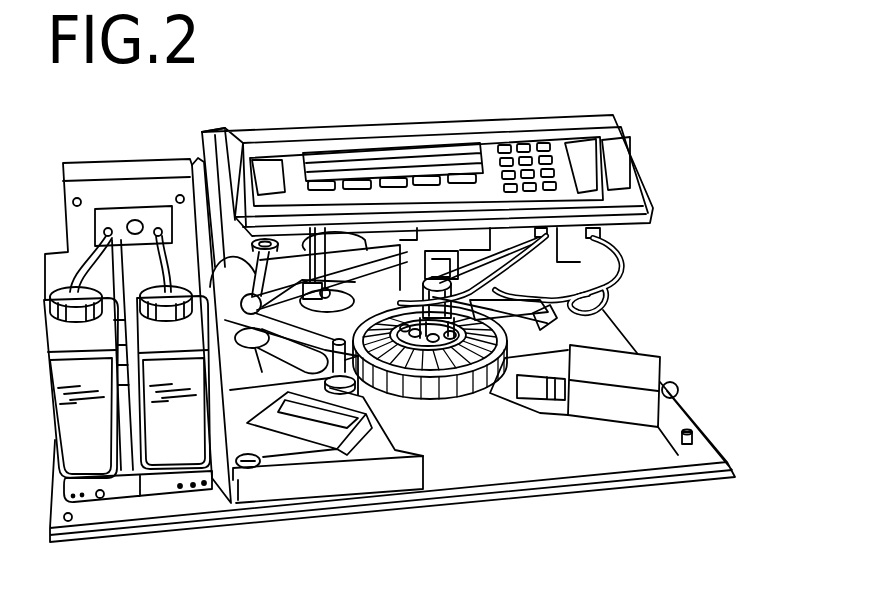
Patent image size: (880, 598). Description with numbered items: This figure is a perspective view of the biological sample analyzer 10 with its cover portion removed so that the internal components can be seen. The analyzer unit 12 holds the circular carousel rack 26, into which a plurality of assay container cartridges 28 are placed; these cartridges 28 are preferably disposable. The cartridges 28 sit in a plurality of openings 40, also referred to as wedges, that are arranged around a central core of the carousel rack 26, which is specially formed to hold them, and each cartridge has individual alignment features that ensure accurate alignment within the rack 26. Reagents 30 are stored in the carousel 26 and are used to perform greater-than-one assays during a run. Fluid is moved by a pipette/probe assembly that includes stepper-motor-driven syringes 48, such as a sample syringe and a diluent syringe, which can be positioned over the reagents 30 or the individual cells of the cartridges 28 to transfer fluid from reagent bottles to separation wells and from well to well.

The biological sample analyzer 10 is at (712, 236).
The analyzer unit 12 is at (468, 460).
The circular carousel rack 26 is at (463, 405).
The assay container cartridges 28 is at (392, 325).
The reagents 30 is at (484, 340).
The openings 40 is at (497, 352).
The syringes 48 is at (278, 240).